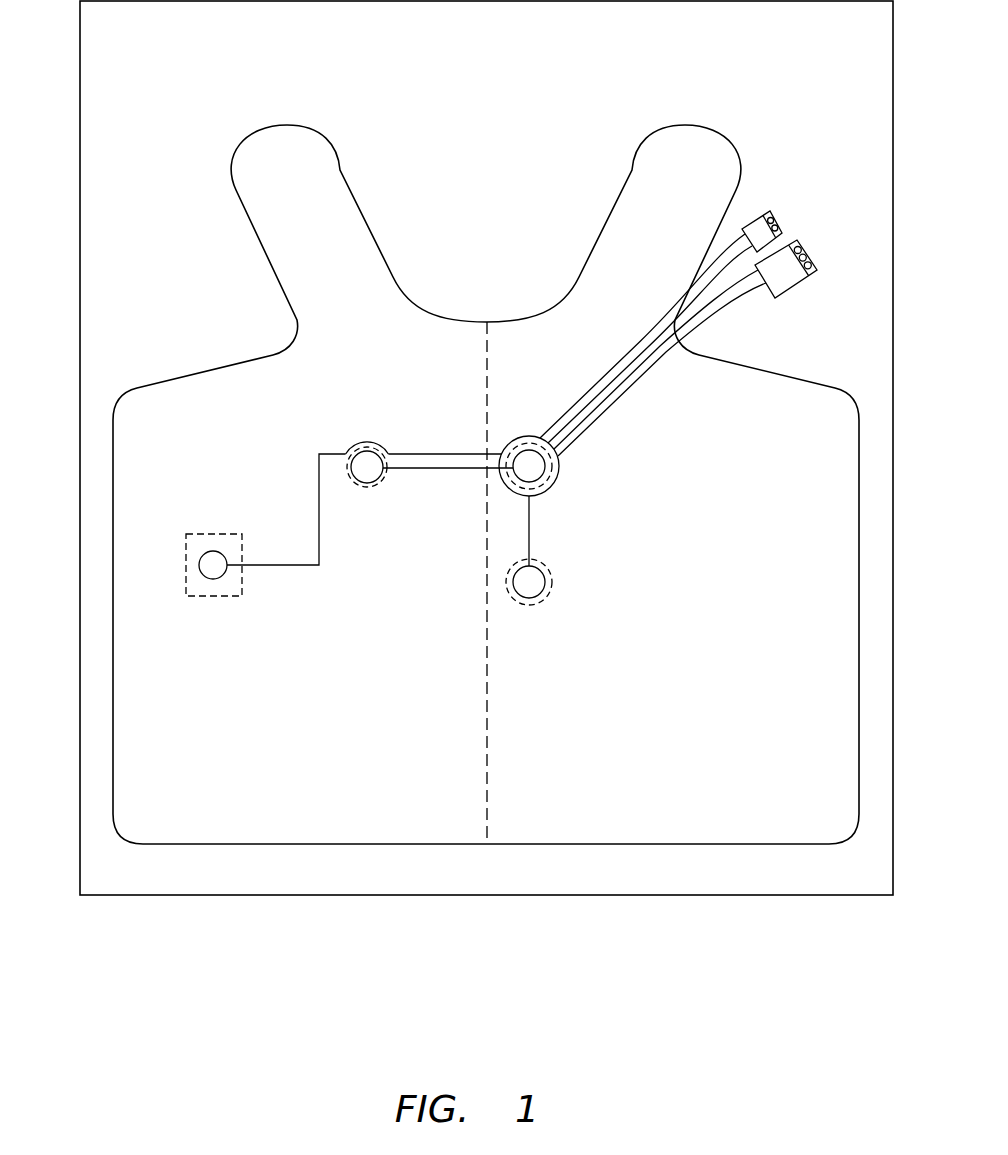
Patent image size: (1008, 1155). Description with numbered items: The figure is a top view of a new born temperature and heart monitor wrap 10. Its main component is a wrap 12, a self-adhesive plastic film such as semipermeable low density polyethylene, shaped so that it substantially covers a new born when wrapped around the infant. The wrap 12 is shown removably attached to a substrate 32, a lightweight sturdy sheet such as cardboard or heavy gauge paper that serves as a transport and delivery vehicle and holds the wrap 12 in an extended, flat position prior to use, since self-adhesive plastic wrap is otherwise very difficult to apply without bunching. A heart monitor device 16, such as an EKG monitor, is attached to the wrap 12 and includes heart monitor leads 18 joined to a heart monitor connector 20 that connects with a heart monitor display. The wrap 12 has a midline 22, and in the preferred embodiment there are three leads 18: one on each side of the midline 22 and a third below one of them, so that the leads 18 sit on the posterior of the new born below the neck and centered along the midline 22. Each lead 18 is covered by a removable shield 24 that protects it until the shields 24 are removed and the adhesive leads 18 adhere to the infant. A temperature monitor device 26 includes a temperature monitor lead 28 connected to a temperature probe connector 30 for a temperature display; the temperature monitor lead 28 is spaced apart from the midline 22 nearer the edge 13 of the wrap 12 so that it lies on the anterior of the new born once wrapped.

The new born temperature and heart monitor wrap 10 is at (459, 507).
The wrap 12 is at (442, 484).
The edge 13 is at (113, 633).
The heart monitor device 16 is at (403, 516).
The heart monitor lead 18 is at (366, 487).
The heart monitor connector 20 is at (805, 285).
The midline 22 is at (490, 372).
The removable shield 24 is at (232, 534).
The temperature monitor device 26 is at (211, 589).
The temperature monitor lead 28 is at (199, 573).
The temperature probe connector 30 is at (771, 211).
The substrate 32 is at (472, 93).